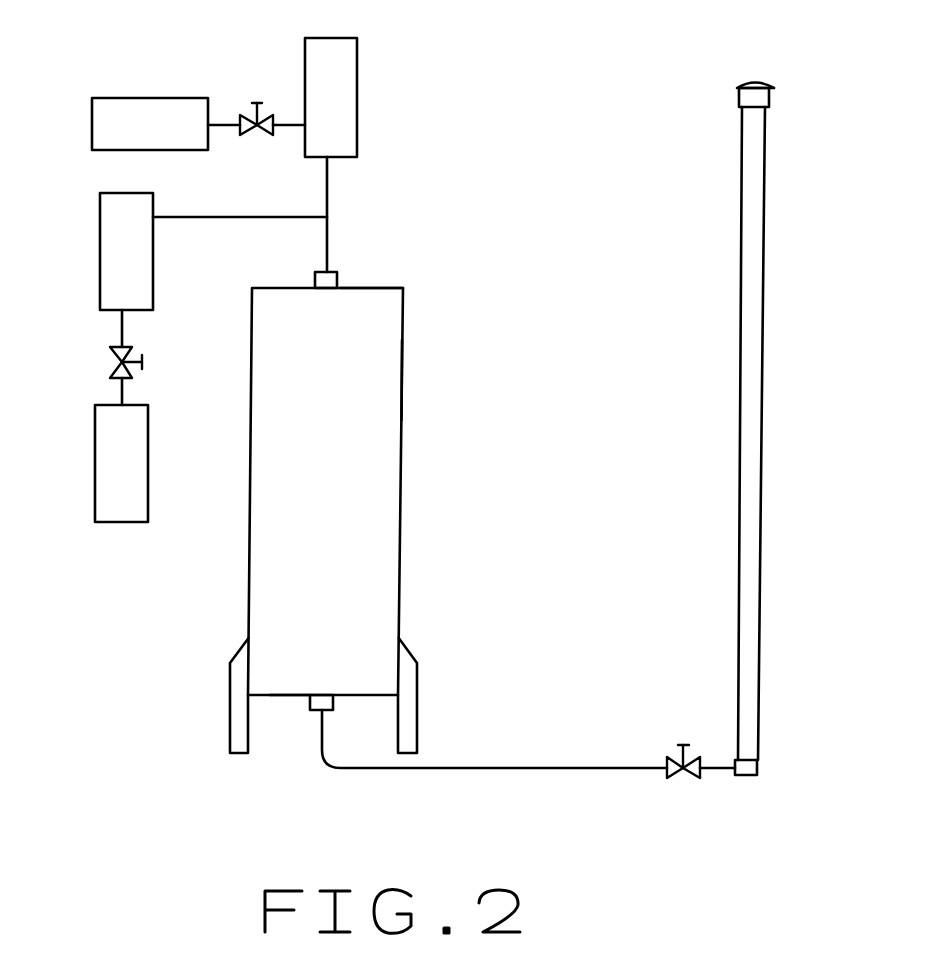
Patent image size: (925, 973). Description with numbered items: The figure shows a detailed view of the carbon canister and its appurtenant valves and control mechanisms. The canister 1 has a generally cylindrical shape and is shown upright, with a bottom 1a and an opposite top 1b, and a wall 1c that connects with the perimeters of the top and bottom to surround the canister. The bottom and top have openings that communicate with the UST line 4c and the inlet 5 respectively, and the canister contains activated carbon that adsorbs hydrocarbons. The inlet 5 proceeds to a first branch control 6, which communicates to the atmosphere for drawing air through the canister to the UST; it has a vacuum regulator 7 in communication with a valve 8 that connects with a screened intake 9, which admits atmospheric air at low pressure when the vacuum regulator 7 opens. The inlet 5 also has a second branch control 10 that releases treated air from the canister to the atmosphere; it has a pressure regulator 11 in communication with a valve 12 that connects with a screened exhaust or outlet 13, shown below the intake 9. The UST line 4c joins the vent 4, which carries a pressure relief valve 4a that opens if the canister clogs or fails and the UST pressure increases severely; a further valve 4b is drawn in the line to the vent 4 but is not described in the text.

The canister 1 is at (440, 508).
The bottom 1a is at (288, 697).
The top 1b is at (383, 288).
The wall 1c is at (403, 390).
The vent 4 is at (760, 442).
The pressure relief valve 4a is at (770, 97).
The valve 4b is at (688, 740).
The UST line 4c is at (560, 767).
The inlet 5 is at (337, 273).
The first branch control 6 is at (328, 185).
The vacuum regulator 7 is at (358, 100).
The valve 8 is at (257, 103).
The screened intake 9 is at (150, 98).
The second branch control 10 is at (262, 218).
The pressure regulator 11 is at (100, 228).
The valve 12 is at (113, 364).
The screened exhaust 13 is at (110, 523).